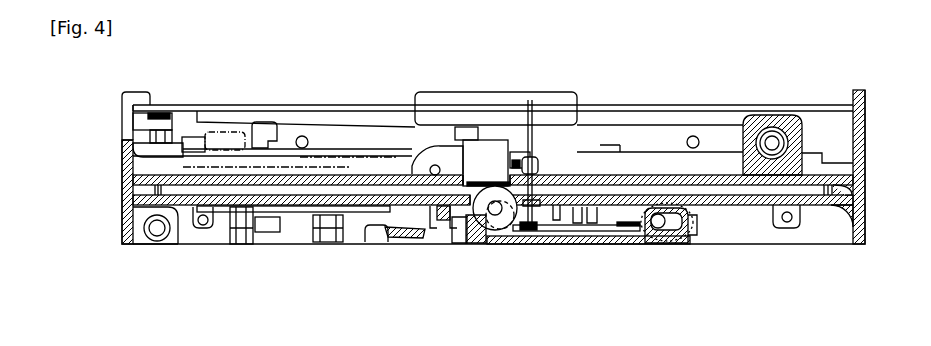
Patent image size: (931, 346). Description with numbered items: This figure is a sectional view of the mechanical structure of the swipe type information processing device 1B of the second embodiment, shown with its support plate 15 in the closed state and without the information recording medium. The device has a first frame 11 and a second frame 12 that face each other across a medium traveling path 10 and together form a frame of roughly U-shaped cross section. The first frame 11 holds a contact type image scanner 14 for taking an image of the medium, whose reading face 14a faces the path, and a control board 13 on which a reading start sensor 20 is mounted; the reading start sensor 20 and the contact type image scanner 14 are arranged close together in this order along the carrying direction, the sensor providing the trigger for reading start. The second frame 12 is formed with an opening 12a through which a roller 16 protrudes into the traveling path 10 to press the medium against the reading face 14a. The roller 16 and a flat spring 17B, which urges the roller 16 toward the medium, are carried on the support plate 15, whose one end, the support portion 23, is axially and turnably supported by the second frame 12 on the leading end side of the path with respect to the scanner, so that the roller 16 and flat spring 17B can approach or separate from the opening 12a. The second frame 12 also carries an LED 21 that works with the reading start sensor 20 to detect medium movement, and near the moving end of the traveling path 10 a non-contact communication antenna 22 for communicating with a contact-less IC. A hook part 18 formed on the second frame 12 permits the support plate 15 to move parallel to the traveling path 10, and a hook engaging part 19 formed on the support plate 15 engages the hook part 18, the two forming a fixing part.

The information processing device 1B is at (631, 86).
The medium traveling path 10 is at (122, 192).
The first frame 11 is at (124, 171).
The second frame 12 is at (122, 233).
The opening 12a is at (475, 193).
The control board 13 is at (200, 106).
The contact type image scanner 14 is at (492, 155).
The reading face 14a is at (499, 155).
The support plate 15 is at (513, 245).
The roller 16 is at (486, 222).
The flat spring 17B is at (587, 225).
The hook part 18 is at (417, 222).
The hook engaging part 19 is at (385, 243).
The reading start sensor 20 is at (534, 160).
The LED 21 is at (527, 222).
The non-contact communication antenna 22 is at (277, 212).
The support portion 23 is at (677, 246).